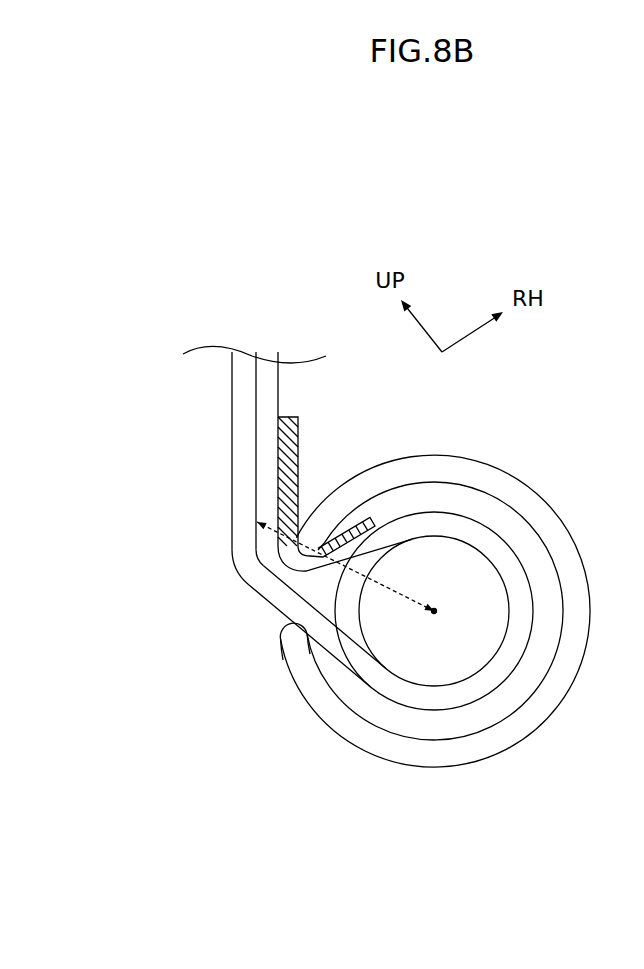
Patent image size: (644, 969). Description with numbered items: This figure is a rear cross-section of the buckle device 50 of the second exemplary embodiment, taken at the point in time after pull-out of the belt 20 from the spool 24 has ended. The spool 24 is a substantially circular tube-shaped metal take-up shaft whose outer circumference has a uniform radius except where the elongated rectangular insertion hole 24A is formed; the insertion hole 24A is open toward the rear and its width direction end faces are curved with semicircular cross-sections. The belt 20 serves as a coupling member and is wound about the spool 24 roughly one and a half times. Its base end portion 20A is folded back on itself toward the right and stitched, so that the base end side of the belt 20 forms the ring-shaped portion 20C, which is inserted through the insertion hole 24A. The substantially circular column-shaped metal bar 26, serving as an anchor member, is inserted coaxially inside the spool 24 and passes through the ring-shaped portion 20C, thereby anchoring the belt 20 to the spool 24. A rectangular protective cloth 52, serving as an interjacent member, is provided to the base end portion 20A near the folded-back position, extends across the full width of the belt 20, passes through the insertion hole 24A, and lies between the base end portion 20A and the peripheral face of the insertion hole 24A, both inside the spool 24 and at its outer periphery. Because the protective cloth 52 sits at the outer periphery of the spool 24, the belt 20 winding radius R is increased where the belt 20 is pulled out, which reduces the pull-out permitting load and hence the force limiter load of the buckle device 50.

The belt 20 is at (232, 432).
The base end portion 20A is at (280, 393).
The ring-shaped portion 20C is at (232, 486).
The protective cloth 52 is at (298, 455).
The spool 24 is at (497, 458).
The insertion hole 24A is at (289, 634).
The bar 26 is at (505, 582).
The buckle device 50 is at (556, 397).
The belt-winding radius R is at (380, 585).